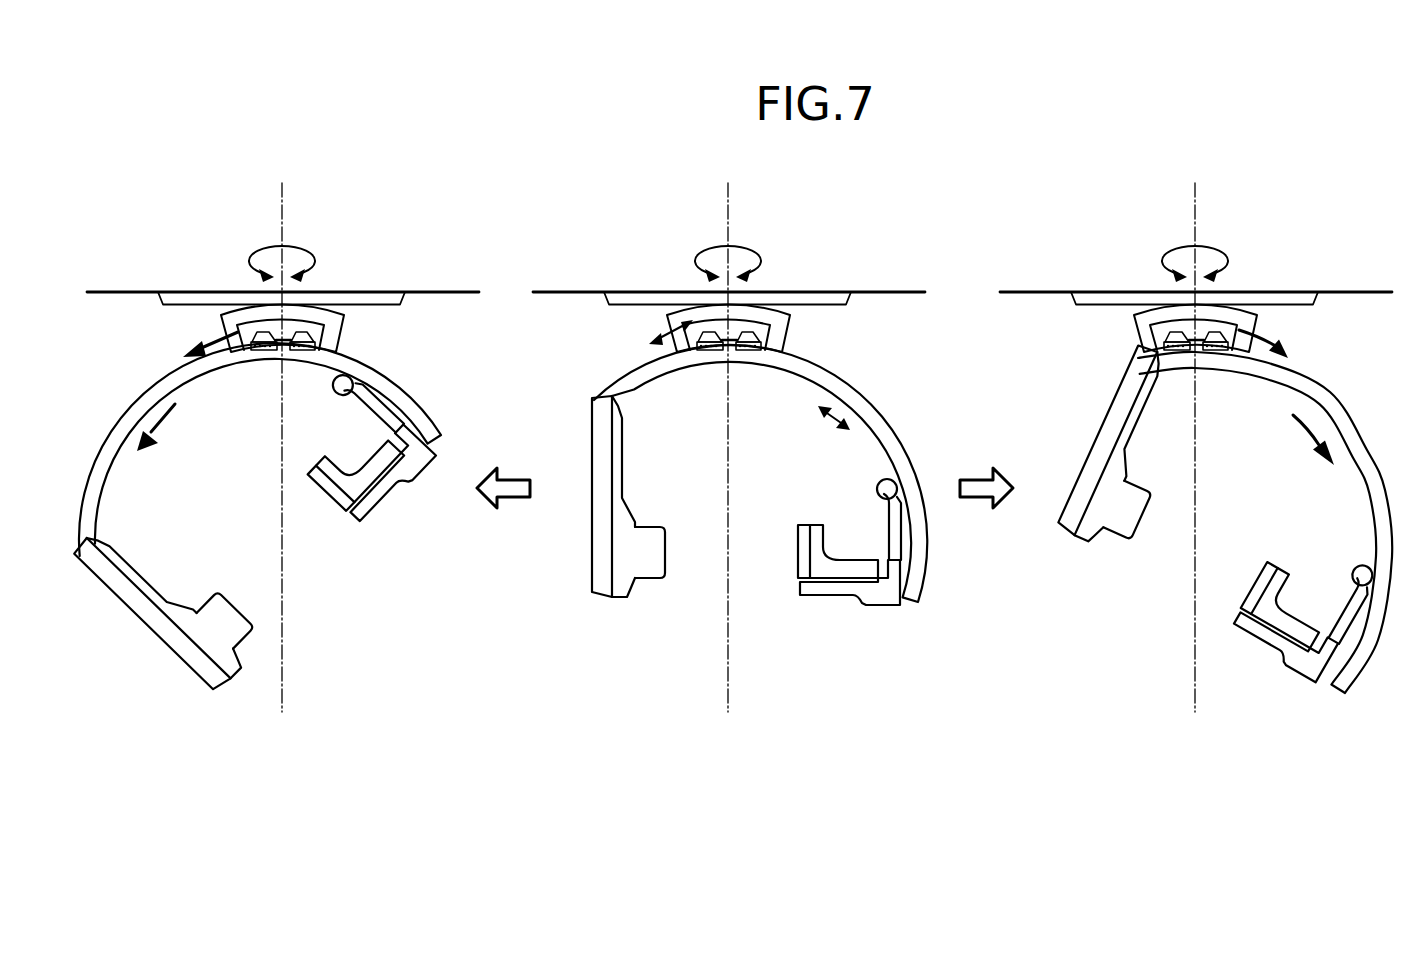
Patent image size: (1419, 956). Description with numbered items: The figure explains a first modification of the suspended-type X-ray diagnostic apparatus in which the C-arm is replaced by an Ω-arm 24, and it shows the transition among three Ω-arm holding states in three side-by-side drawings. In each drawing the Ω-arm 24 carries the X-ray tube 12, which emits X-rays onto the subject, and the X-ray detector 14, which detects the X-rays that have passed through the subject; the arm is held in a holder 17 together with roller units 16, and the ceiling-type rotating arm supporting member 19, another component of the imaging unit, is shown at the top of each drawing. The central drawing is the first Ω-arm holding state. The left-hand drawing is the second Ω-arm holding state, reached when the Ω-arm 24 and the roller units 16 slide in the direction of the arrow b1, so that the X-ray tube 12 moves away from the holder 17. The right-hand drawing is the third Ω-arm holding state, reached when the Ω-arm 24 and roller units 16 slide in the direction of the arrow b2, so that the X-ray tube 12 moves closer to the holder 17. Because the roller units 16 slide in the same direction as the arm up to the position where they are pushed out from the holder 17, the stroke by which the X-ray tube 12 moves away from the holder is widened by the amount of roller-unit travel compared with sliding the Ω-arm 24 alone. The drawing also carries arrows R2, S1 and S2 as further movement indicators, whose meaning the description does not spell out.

The X-ray tube 12 is at (655, 579).
The X-ray detector 14 is at (798, 528).
The roller units 16 is at (688, 324).
The holder 17 is at (789, 322).
The ceiling-type rotating arm supporting member 19 is at (852, 294).
The Ω-arm 24 is at (872, 403).
The rotation direction R2 is at (760, 257).
The sliding direction S1 is at (822, 428).
The sliding direction S2 is at (651, 334).
The arrow b1 is at (185, 342).
The arrow b2 is at (1262, 354).